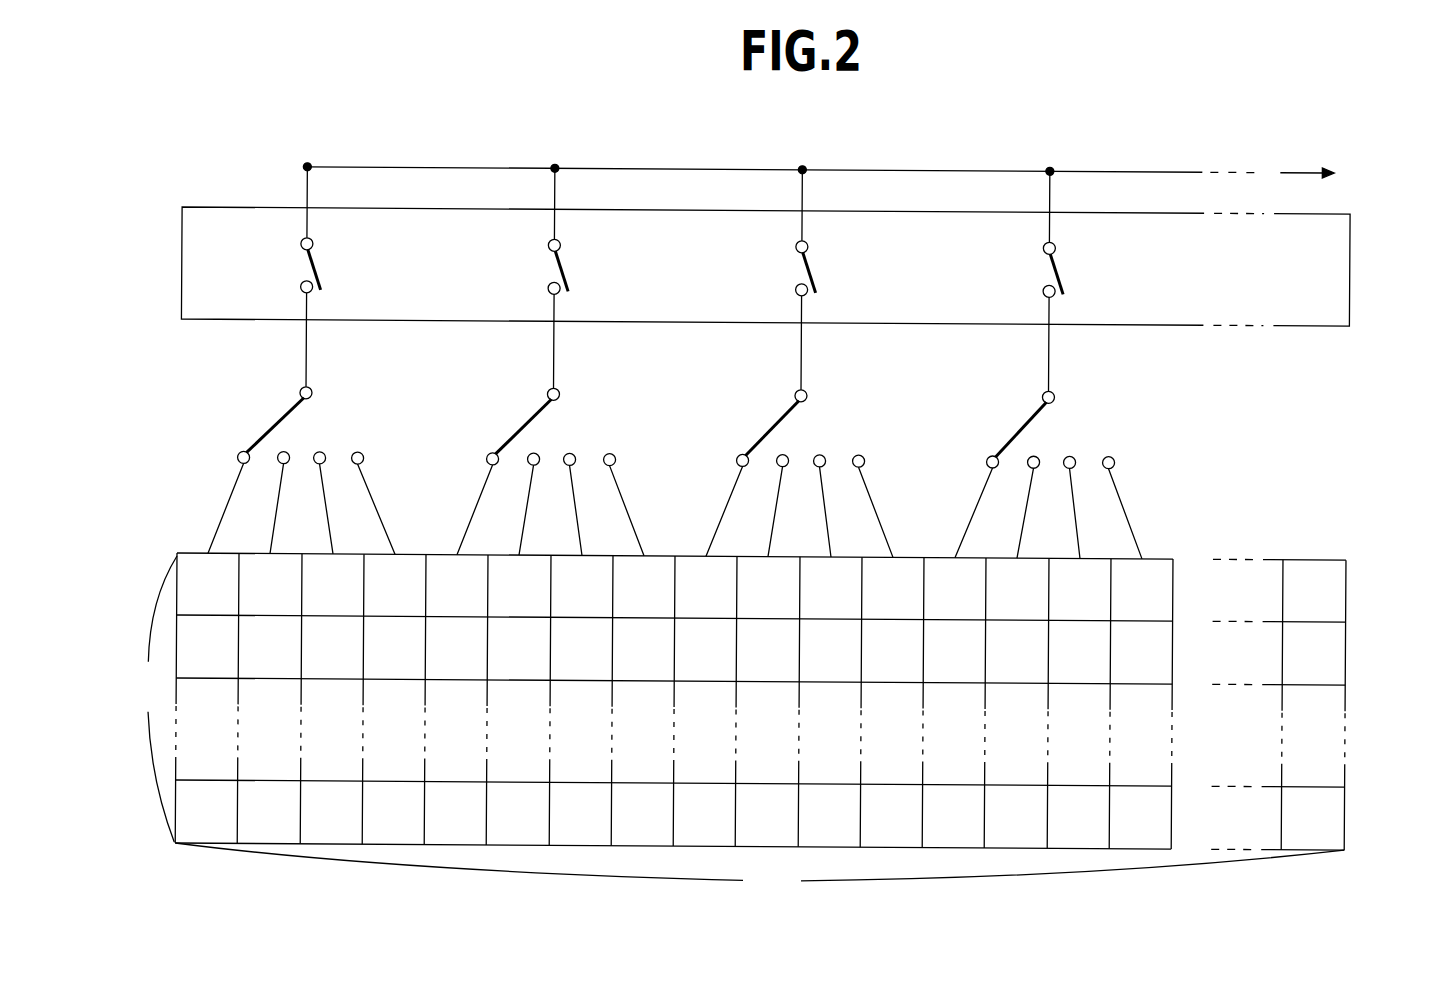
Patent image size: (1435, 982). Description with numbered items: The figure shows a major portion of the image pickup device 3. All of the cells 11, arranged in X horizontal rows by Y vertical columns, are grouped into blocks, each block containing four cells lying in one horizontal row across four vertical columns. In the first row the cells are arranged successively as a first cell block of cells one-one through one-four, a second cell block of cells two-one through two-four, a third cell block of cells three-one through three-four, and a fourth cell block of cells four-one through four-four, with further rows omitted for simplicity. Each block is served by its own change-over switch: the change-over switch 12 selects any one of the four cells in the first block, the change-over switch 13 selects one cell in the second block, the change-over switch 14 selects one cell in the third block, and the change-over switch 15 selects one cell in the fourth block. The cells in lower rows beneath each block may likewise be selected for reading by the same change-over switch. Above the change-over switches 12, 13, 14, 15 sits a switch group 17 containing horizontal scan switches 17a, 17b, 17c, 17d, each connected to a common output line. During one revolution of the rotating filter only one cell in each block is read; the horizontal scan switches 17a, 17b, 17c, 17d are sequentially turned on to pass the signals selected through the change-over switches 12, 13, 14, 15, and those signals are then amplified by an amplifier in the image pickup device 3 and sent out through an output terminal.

The image pickup device 3 is at (196, 140).
The cells 11 is at (1348, 583).
The change-over switch 12 is at (330, 427).
The change-over switch 13 is at (578, 427).
The change-over switch 14 is at (825, 427).
The change-over switch 15 is at (1072, 427).
The switch group 17 is at (240, 206).
The horizontal scan switch 17a is at (320, 271).
The horizontal scan switch 17b is at (568, 271).
The horizontal scan switch 17c is at (815, 271).
The horizontal scan switch 17d is at (1062, 271).